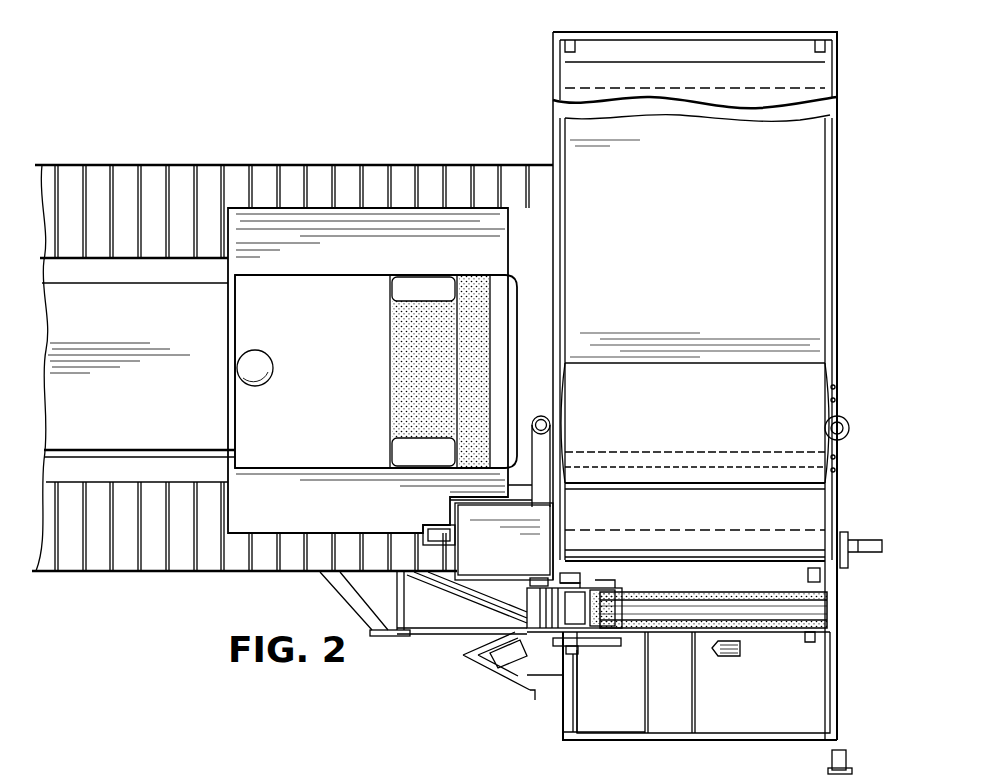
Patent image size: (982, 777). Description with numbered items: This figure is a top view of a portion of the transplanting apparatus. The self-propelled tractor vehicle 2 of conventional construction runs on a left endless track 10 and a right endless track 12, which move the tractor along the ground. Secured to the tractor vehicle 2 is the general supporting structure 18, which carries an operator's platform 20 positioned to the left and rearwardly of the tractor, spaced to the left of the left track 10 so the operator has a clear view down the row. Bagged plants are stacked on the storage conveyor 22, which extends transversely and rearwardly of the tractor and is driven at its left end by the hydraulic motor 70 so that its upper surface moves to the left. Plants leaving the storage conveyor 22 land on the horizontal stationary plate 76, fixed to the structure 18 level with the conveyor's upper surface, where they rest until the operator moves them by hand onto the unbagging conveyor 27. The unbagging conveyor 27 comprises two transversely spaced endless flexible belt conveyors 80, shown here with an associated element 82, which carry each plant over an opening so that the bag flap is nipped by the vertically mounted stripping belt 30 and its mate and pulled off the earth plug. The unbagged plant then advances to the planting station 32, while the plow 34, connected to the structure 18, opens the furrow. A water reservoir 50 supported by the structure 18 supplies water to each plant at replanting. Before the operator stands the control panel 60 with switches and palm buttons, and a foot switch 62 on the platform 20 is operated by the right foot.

The self-propelled tractor vehicle 2 is at (160, 284).
The left endless track 10 is at (210, 562).
The right endless track 12 is at (246, 166).
The general supporting structure 18 is at (560, 737).
The operator's platform 20 is at (817, 695).
The storage conveyor 22 is at (810, 200).
The unbagging conveyor 27 is at (640, 636).
The stripping belt 30 is at (606, 592).
The planting station 32 is at (536, 612).
The plow 34 is at (487, 668).
The water reservoir 50 is at (765, 372).
The control panel 60 is at (665, 726).
The foot switch 62 is at (718, 656).
The hydraulic motor 70 is at (843, 532).
The stationary plate 76 is at (812, 578).
The endless flexible belt conveyor 80 is at (734, 598).
The belt surface 82 is at (700, 606).